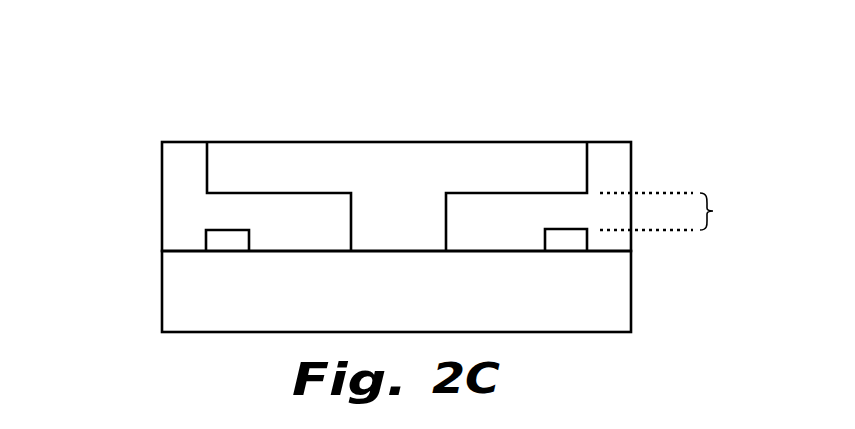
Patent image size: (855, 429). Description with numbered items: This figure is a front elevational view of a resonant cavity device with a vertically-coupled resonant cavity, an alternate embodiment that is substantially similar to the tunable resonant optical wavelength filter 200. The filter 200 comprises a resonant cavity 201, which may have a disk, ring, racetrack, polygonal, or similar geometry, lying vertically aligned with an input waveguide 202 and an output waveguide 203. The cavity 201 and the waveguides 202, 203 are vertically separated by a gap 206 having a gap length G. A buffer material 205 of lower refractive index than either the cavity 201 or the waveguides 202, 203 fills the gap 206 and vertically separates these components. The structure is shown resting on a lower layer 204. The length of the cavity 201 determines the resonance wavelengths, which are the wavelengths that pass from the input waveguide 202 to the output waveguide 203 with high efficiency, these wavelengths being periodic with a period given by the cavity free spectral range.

The tunable resonant optical wavelength filter 200 is at (452, 74).
The resonant cavity 201 is at (297, 163).
The input waveguide 202 is at (217, 242).
The output waveguide 203 is at (573, 249).
The substrate 204 is at (533, 303).
The buffer material 205 is at (187, 173).
The gap 206 is at (676, 211).